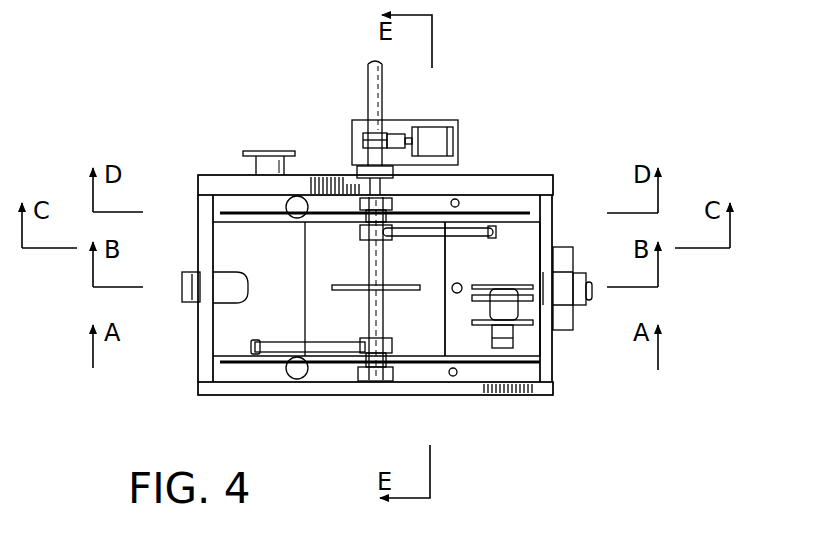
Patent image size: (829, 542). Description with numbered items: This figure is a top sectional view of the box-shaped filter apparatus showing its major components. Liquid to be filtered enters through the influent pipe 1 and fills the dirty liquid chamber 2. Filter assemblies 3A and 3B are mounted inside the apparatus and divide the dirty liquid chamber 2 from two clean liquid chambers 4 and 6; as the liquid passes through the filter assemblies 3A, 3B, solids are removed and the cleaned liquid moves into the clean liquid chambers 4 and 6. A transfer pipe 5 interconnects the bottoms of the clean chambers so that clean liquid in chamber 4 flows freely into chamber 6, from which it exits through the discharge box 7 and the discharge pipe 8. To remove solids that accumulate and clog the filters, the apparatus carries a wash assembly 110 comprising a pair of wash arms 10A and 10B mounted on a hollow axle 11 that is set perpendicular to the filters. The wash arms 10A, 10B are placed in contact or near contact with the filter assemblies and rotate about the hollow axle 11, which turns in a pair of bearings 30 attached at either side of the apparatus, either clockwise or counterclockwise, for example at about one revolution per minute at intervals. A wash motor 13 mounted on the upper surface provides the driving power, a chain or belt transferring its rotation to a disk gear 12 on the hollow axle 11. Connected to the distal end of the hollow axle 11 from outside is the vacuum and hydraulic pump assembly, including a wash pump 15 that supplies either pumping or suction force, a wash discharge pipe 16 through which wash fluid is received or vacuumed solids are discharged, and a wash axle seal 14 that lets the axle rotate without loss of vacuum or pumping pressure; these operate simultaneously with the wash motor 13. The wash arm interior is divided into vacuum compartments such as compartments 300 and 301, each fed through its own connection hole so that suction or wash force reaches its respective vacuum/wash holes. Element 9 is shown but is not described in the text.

The influent pipe 1 is at (180, 280).
The dirty liquid chamber 2 is at (283, 279).
The filter assembly 3A is at (252, 364).
The filter assembly 3B is at (492, 215).
The clean liquid chamber 4 is at (334, 372).
The transfer pipe 5 is at (297, 372).
The clean liquid chamber 6 is at (482, 203).
The discharge box 7 is at (210, 175).
The discharge pipe 8 is at (258, 151).
The outlet port connector 9 is at (573, 283).
The wash arm 10A is at (333, 343).
The wash arm 10B is at (470, 238).
The hollow axle 11 is at (387, 327).
The disk gear 12 is at (352, 284).
The wash motor 13 is at (505, 310).
The wash axle seal 14 is at (360, 175).
The wash pump 15 is at (395, 134).
The wash discharge pipe 16 is at (368, 77).
The bearing 30 is at (375, 383).
The wash assembly 110 is at (424, 319).
The vacuum compartment 300 is at (200, 328).
The vacuum compartment 301 is at (548, 353).